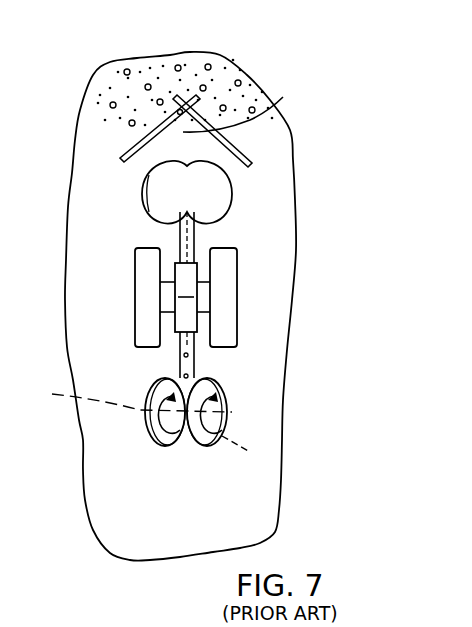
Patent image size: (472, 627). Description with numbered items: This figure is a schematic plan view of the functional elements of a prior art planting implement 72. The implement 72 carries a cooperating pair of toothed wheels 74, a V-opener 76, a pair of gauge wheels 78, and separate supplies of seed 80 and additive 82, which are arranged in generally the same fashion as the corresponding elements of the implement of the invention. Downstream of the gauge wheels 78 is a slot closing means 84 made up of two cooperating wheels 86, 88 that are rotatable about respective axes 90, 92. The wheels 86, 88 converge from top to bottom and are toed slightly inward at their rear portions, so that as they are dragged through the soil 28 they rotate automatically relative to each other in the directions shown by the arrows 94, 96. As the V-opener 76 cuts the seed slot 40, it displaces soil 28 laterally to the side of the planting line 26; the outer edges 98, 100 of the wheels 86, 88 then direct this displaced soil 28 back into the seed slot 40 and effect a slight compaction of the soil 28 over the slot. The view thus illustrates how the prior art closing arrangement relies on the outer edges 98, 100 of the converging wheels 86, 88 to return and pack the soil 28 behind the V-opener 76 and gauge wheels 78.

The planting line 26 is at (245, 105).
The soil 28 is at (263, 500).
The seed slot 40 is at (192, 362).
The prior art implement 72 is at (316, 241).
The toothed wheels 74 is at (209, 100).
The V-opener 76 is at (248, 190).
The gauge wheels 78 is at (242, 272).
The seed supply 80 is at (178, 275).
The additive supply 82 is at (178, 322).
The slot closing means 84 is at (149, 450).
The closing wheel 86 is at (158, 427).
The closing wheel 88 is at (221, 412).
The axis 90 is at (127, 398).
The axis 92 is at (249, 452).
The arrow 94 is at (158, 396).
The arrow 96 is at (214, 386).
The outer edge 98 is at (154, 445).
The outer edge 100 is at (210, 447).